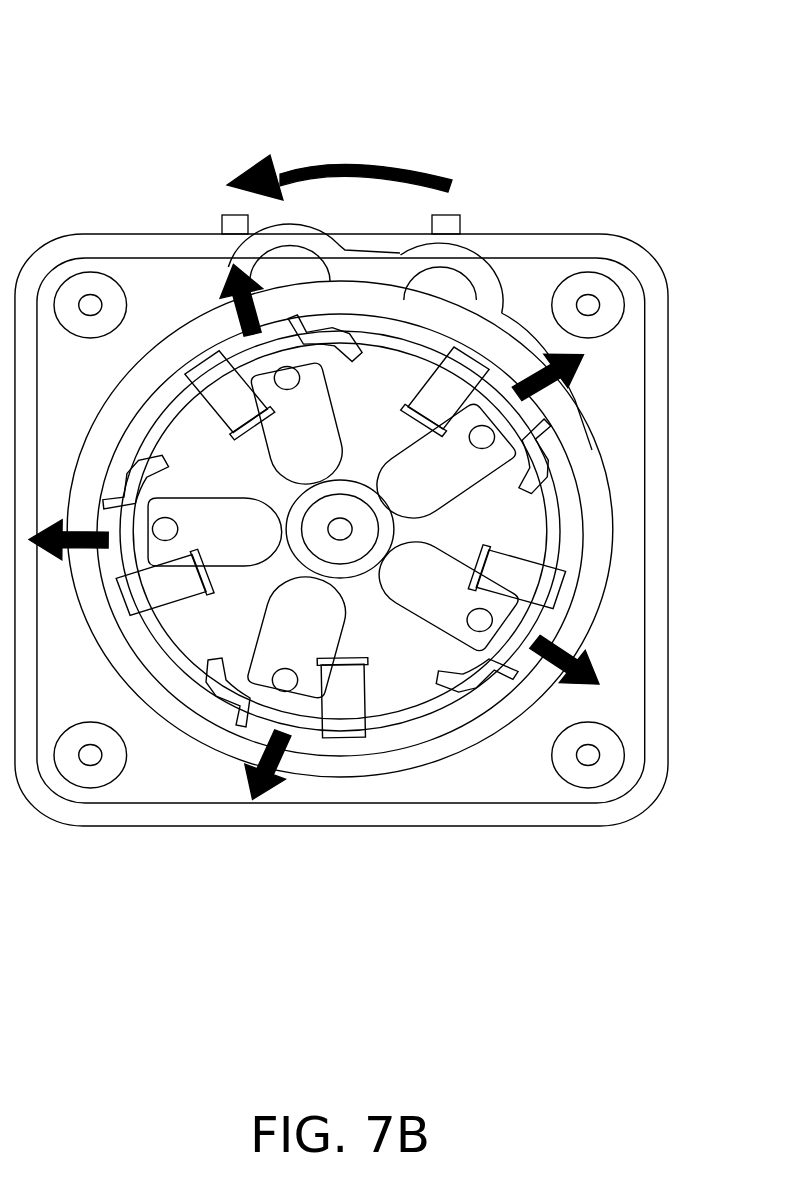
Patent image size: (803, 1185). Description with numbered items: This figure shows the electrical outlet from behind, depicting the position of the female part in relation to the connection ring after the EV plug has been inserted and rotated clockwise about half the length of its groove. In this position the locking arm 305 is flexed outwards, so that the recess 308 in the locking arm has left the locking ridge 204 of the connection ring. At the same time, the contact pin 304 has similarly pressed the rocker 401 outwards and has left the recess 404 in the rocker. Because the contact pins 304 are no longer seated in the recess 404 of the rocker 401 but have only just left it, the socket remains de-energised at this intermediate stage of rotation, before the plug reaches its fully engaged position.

The locking ridge 204 is at (341, 277).
The locking arm 305 is at (373, 263).
The recess 308 is at (472, 252).
The contact pin 304 is at (287, 683).
The rocker 401 is at (283, 712).
The recess 404 is at (217, 685).